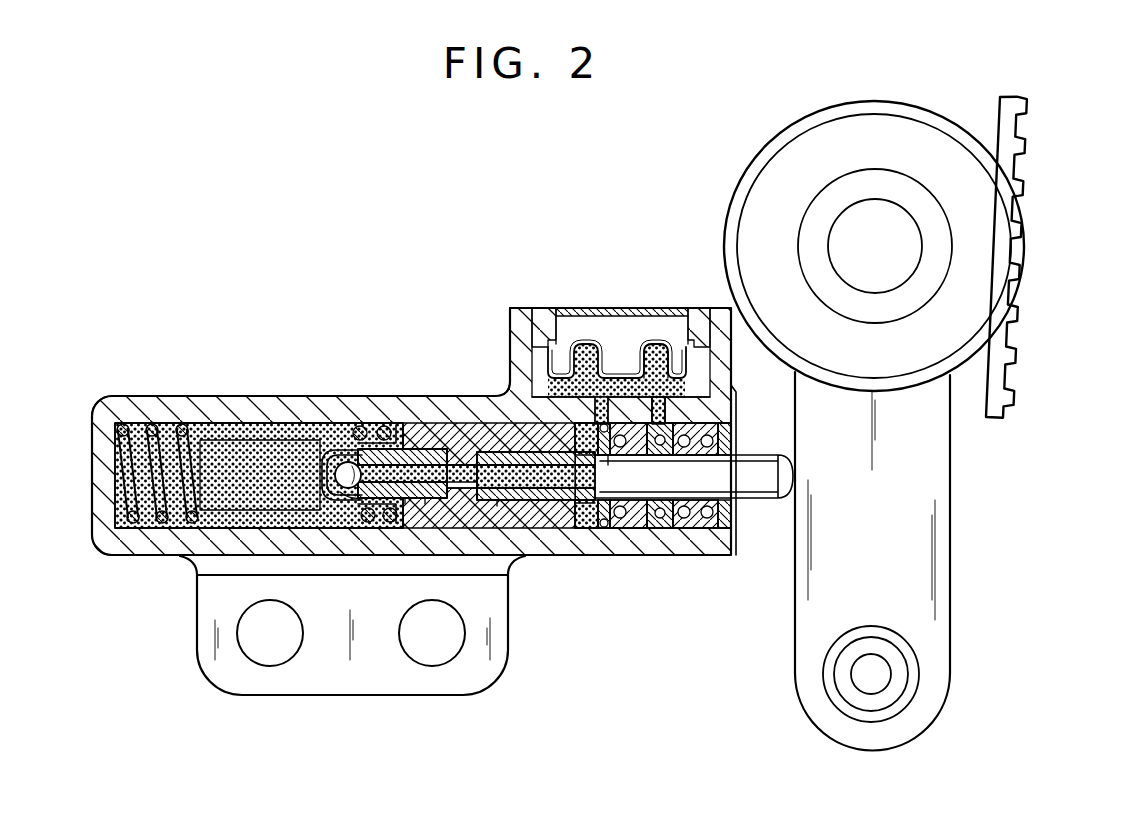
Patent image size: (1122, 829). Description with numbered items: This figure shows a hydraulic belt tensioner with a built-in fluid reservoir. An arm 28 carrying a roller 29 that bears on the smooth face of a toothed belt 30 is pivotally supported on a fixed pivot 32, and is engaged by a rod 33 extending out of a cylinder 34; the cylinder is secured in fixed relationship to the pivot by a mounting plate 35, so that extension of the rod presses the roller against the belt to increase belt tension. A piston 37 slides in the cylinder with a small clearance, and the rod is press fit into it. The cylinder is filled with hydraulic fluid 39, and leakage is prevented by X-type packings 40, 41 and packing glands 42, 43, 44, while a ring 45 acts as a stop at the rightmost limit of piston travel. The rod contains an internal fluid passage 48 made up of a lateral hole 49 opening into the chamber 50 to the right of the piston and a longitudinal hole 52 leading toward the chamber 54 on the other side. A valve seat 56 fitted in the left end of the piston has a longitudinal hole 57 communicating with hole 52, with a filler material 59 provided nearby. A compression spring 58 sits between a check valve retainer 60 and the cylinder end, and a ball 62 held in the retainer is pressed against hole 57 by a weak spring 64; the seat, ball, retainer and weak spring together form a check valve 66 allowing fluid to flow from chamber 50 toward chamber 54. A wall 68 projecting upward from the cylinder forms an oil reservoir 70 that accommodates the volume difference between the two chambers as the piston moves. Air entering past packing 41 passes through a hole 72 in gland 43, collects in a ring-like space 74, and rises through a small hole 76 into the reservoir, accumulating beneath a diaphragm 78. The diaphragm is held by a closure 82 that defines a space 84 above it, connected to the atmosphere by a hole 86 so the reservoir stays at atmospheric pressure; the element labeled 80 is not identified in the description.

The arm 28 is at (951, 518).
The roller 29 is at (905, 102).
The toothed belt 30 is at (1026, 122).
The fixed pivot 32 is at (880, 683).
The rod 33 is at (760, 500).
The cylinder 34 is at (312, 394).
The mounting plate 35 is at (358, 688).
The piston 37 is at (438, 430).
The hydraulic fluid 39 is at (238, 430).
The X-type packing 40 is at (628, 528).
The X-type packing 41 is at (696, 528).
The packing gland 42 is at (605, 528).
The packing gland 43 is at (662, 528).
The packing gland 44 is at (726, 540).
The ring 45 is at (586, 528).
The internal fluid passage 48 is at (511, 456).
The lateral hole 49 is at (677, 480).
The chamber 50 is at (575, 503).
The longitudinal hole 52 is at (499, 502).
The chamber 54 is at (214, 489).
The valve seat 56 is at (413, 447).
The longitudinal hole 57 is at (408, 502).
The compression spring 58 is at (170, 522).
The filler material 59 is at (427, 502).
The check valve retainer 60 is at (336, 481).
The ball 62 is at (325, 470).
The weak spring 64 is at (355, 440).
The check valve 66 is at (345, 495).
The wall 68 is at (720, 372).
The oil reservoir 70 is at (733, 410).
The hole 72 is at (670, 428).
The ring-like space 74 is at (656, 528).
The small hole 76 is at (660, 350).
The diaphragm 78 is at (545, 325).
The air chamber 80 is at (613, 330).
The closure 82 is at (585, 350).
The space 84 is at (623, 313).
The hole 86 is at (697, 325).